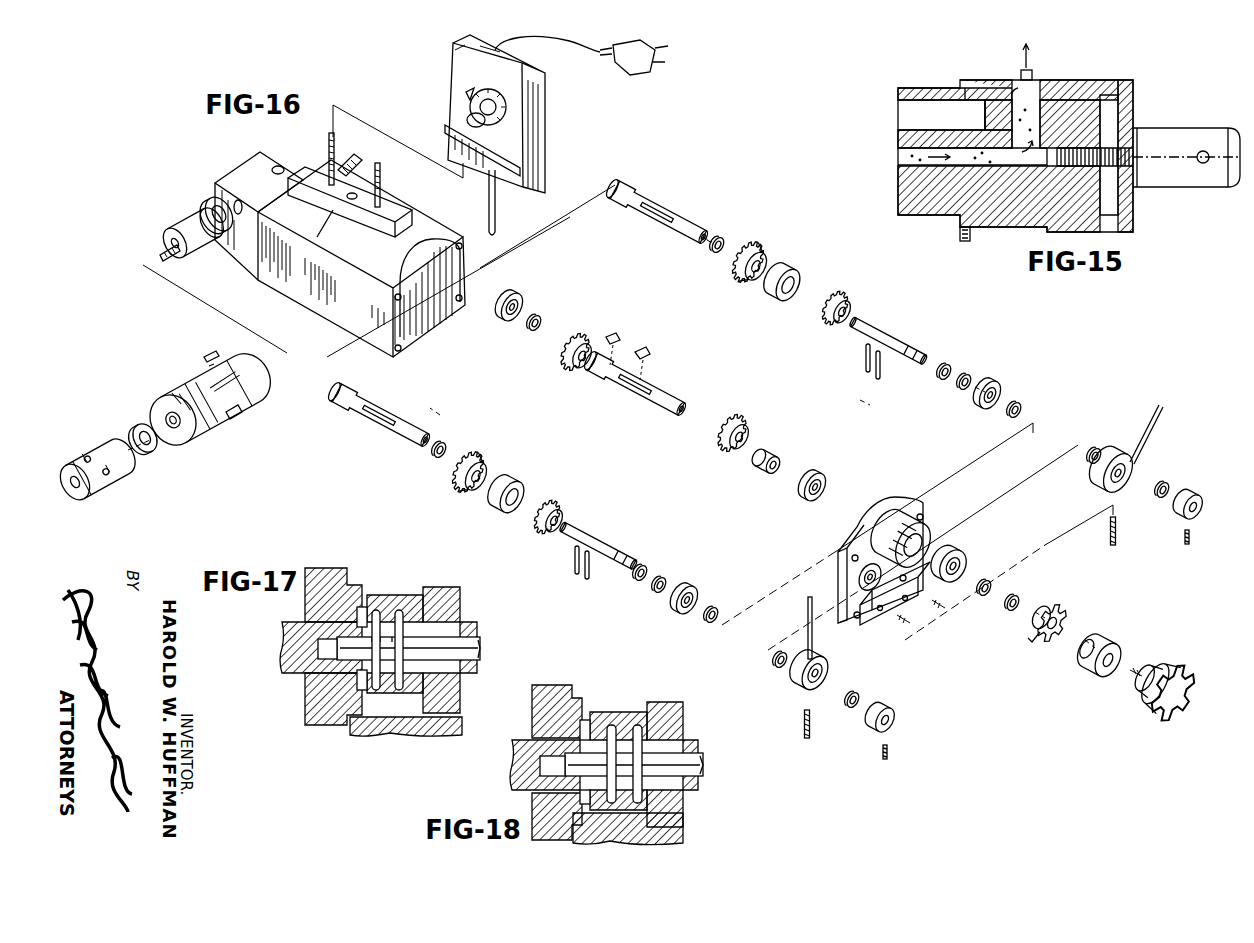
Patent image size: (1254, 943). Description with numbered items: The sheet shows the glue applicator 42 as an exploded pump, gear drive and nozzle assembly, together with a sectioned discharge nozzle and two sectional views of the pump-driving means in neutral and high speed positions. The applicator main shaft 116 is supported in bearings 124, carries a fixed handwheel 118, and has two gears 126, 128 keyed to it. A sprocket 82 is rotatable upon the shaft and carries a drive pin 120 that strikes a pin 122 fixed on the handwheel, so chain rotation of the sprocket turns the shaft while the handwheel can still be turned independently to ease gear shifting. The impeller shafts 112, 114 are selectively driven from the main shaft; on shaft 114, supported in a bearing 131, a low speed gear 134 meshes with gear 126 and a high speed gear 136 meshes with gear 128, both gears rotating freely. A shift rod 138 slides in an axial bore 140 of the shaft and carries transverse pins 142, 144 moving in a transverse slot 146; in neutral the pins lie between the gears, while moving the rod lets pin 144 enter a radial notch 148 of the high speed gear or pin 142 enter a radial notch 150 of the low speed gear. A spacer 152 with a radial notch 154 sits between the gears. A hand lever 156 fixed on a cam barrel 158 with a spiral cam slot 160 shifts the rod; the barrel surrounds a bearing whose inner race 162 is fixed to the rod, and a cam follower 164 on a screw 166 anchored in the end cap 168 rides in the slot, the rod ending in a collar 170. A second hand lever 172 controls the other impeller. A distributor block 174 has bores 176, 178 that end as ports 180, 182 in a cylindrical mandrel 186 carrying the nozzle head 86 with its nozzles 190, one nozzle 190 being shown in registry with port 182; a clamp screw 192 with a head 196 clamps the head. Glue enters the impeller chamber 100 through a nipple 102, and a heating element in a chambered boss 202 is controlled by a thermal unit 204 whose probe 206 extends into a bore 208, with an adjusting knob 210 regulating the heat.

In FIG. 16, the glue applicator 42 is at (347, 315).
In FIG. 16, the sprocket 82 is at (1068, 615).
In FIG. 15, the nozzle head 86 is at (1100, 80).
In FIG. 16, the nozzle head 86 is at (187, 388).
In FIG. 15, the impeller chamber 100 is at (1033, 73).
In FIG. 16, the nipple 102 is at (356, 156).
In FIG. 16, the impeller shaft 112 is at (673, 208).
In FIG. 16, the impeller shaft 114 is at (383, 425).
In FIG. 17, the impeller shaft 114 is at (283, 626).
In FIG. 18, the impeller shaft 114 is at (514, 762).
In FIG. 16, the applicator main shaft 116 is at (663, 395).
In FIG. 16, the handwheel 118 is at (1150, 712).
In FIG. 16, the drive pin 120 is at (1058, 647).
In FIG. 16, the pin 122 is at (1098, 672).
In FIG. 16, the bearings 124 is at (520, 298).
In FIG. 16, the gear 126 is at (578, 334).
In FIG. 16, the gear 128 is at (738, 418).
In FIG. 16, the bearing 131 is at (995, 380).
In FIG. 16, the low speed gear 134 is at (748, 240).
In FIG. 17, the low speed gear 134 is at (318, 566).
In FIG. 18, the low speed gear 134 is at (553, 683).
In FIG. 16, the high speed gear 136 is at (820, 318).
In FIG. 17, the high speed gear 136 is at (462, 708).
In FIG. 18, the high speed gear 136 is at (672, 702).
In FIG. 16, the shift rod 138 is at (900, 340).
In FIG. 17, the shift rod 138 is at (483, 645).
In FIG. 18, the shift rod 138 is at (705, 763).
In FIG. 17, the axial bore 140 is at (318, 648).
In FIG. 16, the transverse pin 142 is at (862, 353).
In FIG. 17, the transverse pin 142 is at (376, 692).
In FIG. 18, the transverse pin 142 is at (611, 726).
In FIG. 16, the transverse pin 144 is at (880, 375).
In FIG. 17, the transverse pin 144 is at (398, 692).
In FIG. 18, the transverse pin 144 is at (643, 800).
In FIG. 17, the transverse slot 146 is at (362, 672).
In FIG. 18, the transverse slot 146 is at (583, 783).
In FIG. 16, the radial notch 148 is at (850, 306).
In FIG. 17, the radial notch 148 is at (410, 597).
In FIG. 18, the radial notch 148 is at (640, 712).
In FIG. 17, the radial notch 150 is at (360, 605).
In FIG. 18, the radial notch 150 is at (586, 718).
In FIG. 16, the spacer 152 is at (808, 284).
In FIG. 17, the spacer 152 is at (392, 580).
In FIG. 16, the radial notch 154 is at (796, 268).
In FIG. 16, the hand lever 156 is at (800, 612).
In FIG. 16, the cam barrel 158 is at (817, 663).
In FIG. 16, the cam slot 160 is at (800, 688).
In FIG. 16, the inner race 162 is at (825, 672).
In FIG. 16, the cam follower 164 is at (852, 708).
In FIG. 16, the screw 166 is at (804, 732).
In FIG. 16, the end cap 168 is at (896, 500).
In FIG. 18, the end cap 168 is at (683, 840).
In FIG. 16, the collar 170 is at (897, 710).
In FIG. 16, the hand lever 172 is at (1166, 412).
In FIG. 16, the distributor block 174 is at (262, 174).
In FIG. 15, the bore 176 is at (910, 126).
In FIG. 15, the bore 178 is at (905, 160).
In FIG. 15, the port 180 is at (972, 108).
In FIG. 16, the port 180 is at (207, 213).
In FIG. 15, the port 182 is at (1014, 104).
In FIG. 16, the port 182 is at (198, 221).
In FIG. 15, the mandrel 186 is at (1072, 105).
In FIG. 15, the nozzle 190 is at (965, 242).
In FIG. 16, the nozzle 190 is at (208, 362).
In FIG. 15, the clamp screw 192 is at (1106, 182).
In FIG. 16, the clamp screw 192 is at (158, 249).
In FIG. 15, the head 196 is at (1172, 130).
In FIG. 16, the head 196 is at (96, 495).
In FIG. 16, the chambered boss 202 is at (302, 180).
In FIG. 16, the thermal unit 204 is at (548, 110).
In FIG. 16, the heat-responsive probe 206 is at (497, 206).
In FIG. 16, the bore 208 is at (366, 193).
In FIG. 16, the adjusting knob 210 is at (508, 132).